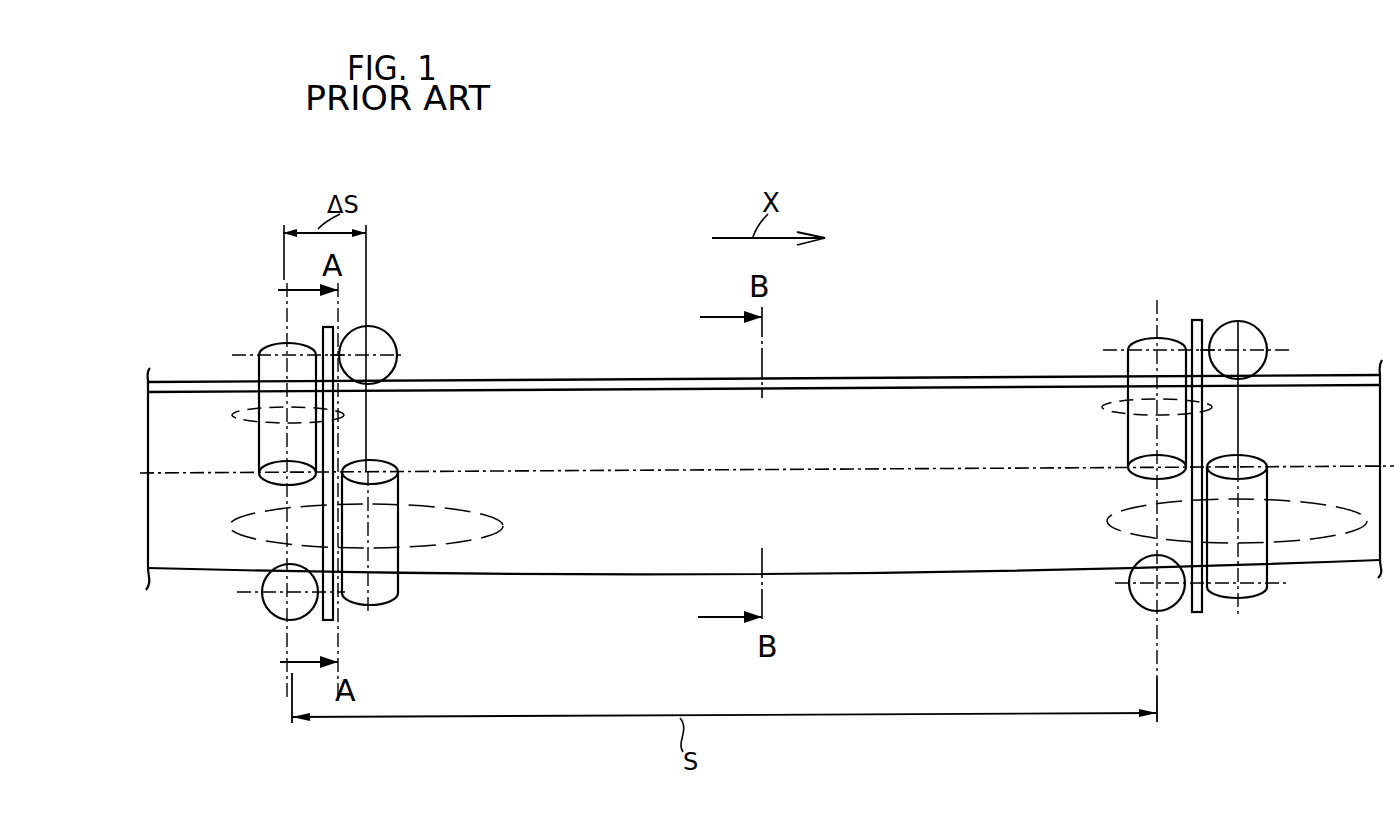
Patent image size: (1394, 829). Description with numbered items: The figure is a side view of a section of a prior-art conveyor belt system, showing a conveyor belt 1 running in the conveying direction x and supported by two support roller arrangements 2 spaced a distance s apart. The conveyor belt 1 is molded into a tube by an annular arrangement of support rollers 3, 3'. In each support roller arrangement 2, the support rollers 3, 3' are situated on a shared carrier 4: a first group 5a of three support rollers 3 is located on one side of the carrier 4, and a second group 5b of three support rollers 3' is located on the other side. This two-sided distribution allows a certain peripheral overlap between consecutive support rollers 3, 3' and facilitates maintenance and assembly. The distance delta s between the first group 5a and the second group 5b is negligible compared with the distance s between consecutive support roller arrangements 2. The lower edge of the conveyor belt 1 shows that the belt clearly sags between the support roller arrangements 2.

The conveyor belt 1 is at (568, 401).
The support roller arrangement 2 is at (226, 660).
The support roller 3 is at (728, 474).
The support roller 3' is at (835, 420).
The carrier 4 is at (335, 612).
The first group 5a is at (255, 333).
The second group 5b is at (397, 318).